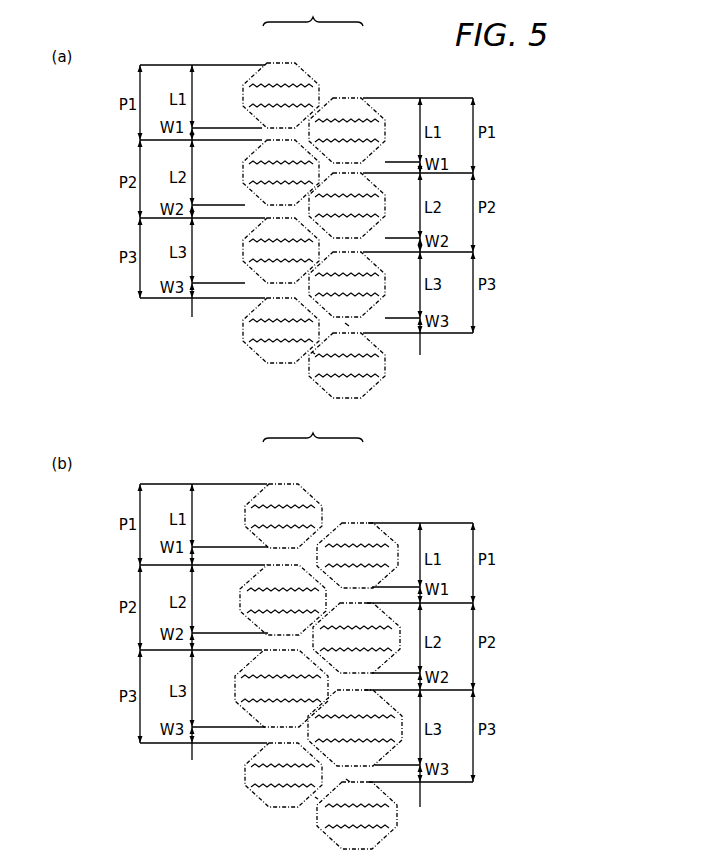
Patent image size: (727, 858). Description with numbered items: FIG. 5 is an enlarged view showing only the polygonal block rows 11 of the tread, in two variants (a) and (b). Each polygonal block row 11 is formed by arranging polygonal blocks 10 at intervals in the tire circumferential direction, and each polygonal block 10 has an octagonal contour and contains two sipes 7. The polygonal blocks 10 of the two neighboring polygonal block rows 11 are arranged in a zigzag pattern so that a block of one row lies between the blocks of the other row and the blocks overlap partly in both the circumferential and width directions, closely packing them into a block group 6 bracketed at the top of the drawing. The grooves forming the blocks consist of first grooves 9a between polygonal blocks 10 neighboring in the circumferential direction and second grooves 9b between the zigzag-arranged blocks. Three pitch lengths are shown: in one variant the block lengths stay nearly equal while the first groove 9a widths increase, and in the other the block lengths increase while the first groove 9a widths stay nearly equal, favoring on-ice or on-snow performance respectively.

The cell column pair 6 is at (313, 221).
The sipe 7 is at (262, 108).
The first groove 9a is at (349, 325).
The second groove 9b is at (313, 352).
The polygonal block 10 is at (262, 77).
The polygonal block row 11 is at (309, 439).